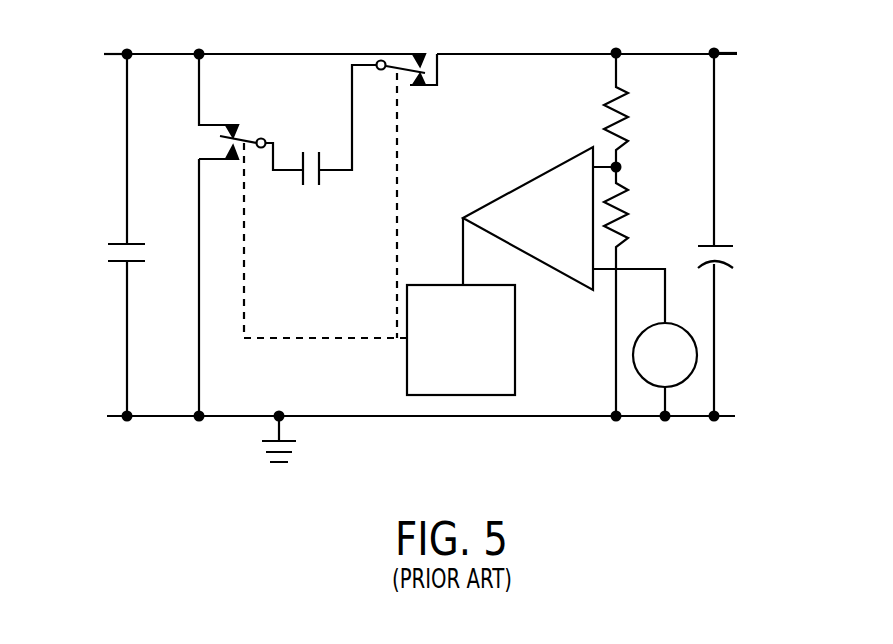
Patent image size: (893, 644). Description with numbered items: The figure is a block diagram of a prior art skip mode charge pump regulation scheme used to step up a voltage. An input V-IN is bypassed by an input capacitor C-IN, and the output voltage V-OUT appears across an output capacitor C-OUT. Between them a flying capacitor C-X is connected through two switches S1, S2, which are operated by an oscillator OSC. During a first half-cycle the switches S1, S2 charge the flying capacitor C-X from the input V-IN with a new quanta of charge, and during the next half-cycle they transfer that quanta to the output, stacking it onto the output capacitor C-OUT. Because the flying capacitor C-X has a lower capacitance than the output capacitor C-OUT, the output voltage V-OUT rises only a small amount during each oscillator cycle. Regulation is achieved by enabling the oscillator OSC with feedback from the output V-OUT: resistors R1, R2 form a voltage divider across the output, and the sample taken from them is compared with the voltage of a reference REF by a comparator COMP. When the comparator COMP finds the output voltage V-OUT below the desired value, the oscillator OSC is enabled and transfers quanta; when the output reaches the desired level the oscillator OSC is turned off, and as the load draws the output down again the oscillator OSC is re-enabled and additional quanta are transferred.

The input V-IN is at (95, 53).
The output voltage V-OUT is at (757, 53).
The input capacitor C-IN is at (103, 245).
The output capacitor C-OUT is at (750, 234).
The flying capacitor C-X is at (336, 125).
The switch S1 is at (237, 147).
The switch S2 is at (407, 53).
The resistor R1 is at (632, 110).
The resistor R2 is at (632, 291).
The comparator COMP is at (564, 235).
The oscillator OSC is at (461, 340).
The reference REF is at (670, 354).